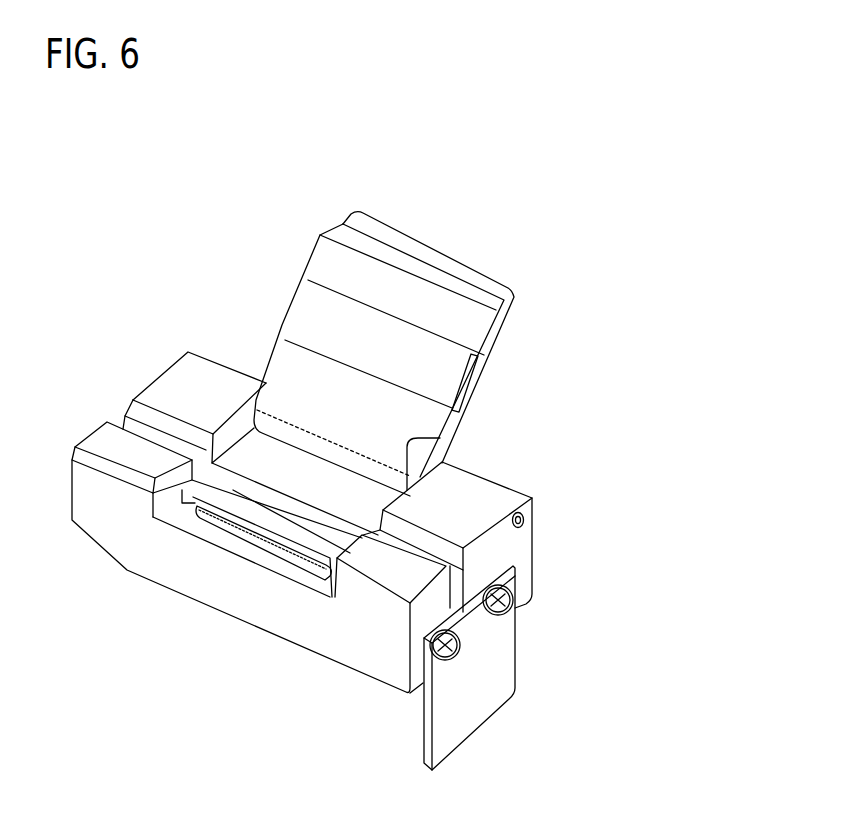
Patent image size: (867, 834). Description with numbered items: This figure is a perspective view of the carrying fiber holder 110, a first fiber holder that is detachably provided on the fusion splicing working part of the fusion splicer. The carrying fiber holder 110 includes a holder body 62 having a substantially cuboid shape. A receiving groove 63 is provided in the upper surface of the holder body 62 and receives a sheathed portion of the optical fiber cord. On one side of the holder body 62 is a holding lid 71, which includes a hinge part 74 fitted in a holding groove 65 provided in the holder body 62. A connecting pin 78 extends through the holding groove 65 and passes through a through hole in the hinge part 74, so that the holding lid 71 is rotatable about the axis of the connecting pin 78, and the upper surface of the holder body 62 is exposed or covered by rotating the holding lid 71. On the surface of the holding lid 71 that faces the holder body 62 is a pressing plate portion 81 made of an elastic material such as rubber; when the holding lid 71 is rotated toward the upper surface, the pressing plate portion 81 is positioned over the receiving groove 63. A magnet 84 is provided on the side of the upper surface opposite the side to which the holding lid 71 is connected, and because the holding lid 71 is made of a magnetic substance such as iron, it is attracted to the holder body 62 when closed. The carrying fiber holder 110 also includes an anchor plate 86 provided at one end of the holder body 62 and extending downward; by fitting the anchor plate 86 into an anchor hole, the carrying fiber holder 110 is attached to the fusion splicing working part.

The carrying fiber holder 110 is at (545, 398).
The holder body 62 is at (217, 608).
The receiving groove 63 is at (155, 438).
The holding groove 65 is at (440, 438).
The holding lid 71 is at (515, 305).
The hinge part 74 is at (273, 428).
The connecting pin 78 is at (524, 520).
The pressing plate portion 81 is at (392, 343).
The magnet 84 is at (220, 530).
The anchor plate 86 is at (497, 668).